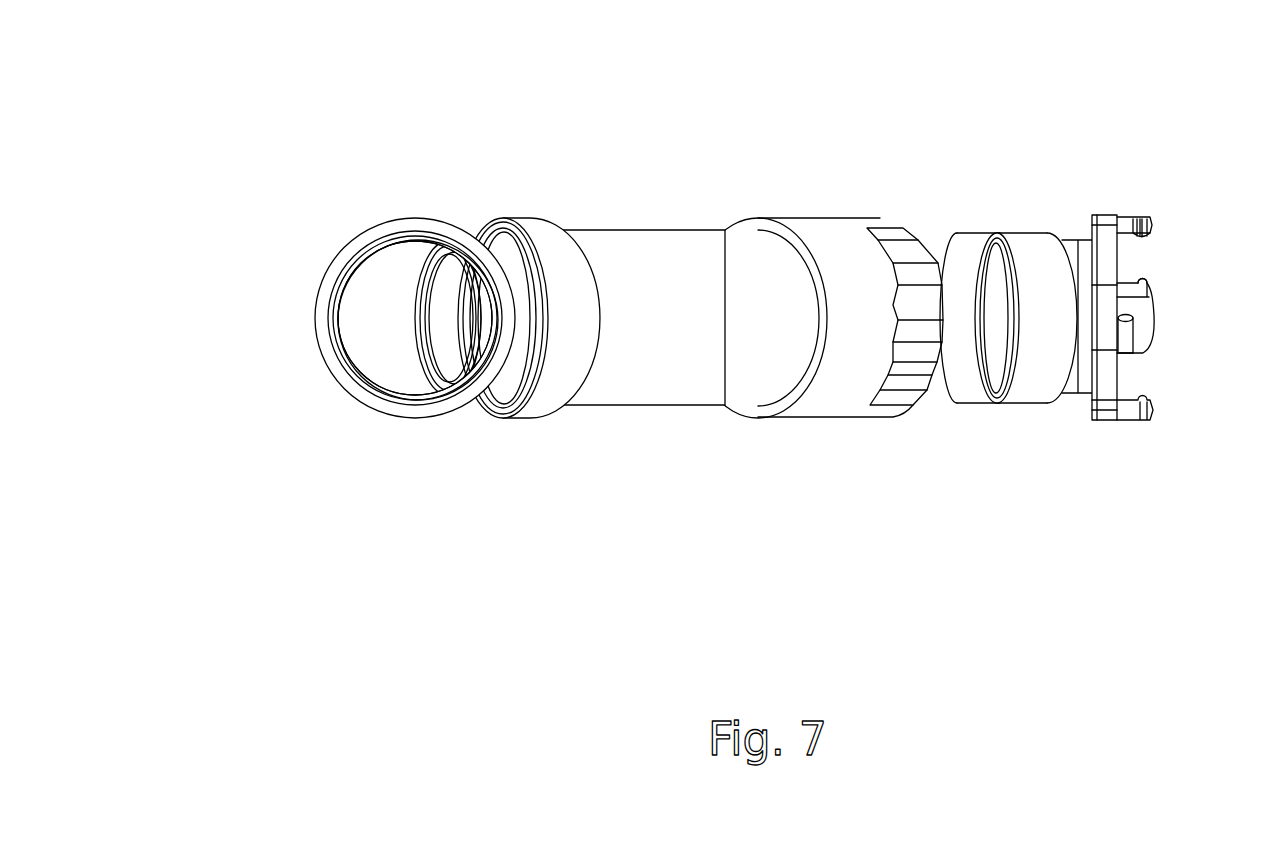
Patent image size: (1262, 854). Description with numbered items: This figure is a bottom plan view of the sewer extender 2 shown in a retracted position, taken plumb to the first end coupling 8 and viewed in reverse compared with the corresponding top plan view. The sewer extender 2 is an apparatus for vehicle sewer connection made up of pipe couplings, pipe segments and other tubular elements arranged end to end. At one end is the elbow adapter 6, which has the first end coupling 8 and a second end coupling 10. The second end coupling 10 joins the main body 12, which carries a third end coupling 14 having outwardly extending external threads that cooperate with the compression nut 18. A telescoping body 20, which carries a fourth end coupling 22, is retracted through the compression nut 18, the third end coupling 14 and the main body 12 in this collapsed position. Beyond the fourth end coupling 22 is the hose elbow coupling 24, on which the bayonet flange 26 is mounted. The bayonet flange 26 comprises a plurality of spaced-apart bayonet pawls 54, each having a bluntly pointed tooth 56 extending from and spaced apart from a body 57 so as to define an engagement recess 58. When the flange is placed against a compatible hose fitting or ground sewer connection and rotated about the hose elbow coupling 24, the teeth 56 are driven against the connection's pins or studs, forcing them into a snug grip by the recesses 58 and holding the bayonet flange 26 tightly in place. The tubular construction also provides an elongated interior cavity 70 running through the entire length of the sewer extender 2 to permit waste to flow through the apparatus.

The sewer extender 2 is at (682, 132).
The elbow adapter 6 is at (497, 247).
The first end coupling 8 is at (415, 225).
The second end coupling 10 is at (543, 235).
The main body 12 is at (698, 328).
The third end coupling 14 is at (835, 245).
The compression nut 18 is at (888, 247).
The telescoping body 20 is at (947, 257).
The fourth end coupling 22 is at (1023, 247).
The hose elbow coupling 24 is at (1060, 252).
The bayonet flange 26 is at (1133, 217).
The bayonet pawls 54 is at (1147, 283).
The bluntly pointed tooth 56 is at (1143, 353).
The body 57 is at (1137, 306).
The engagement recess 58 is at (1127, 333).
The elongated interior cavity 70 is at (385, 332).